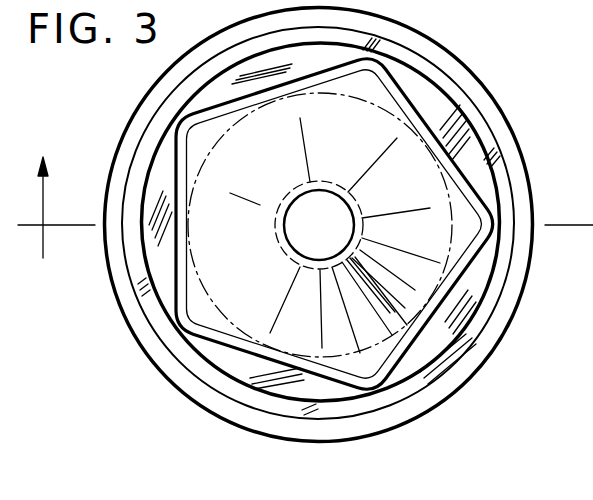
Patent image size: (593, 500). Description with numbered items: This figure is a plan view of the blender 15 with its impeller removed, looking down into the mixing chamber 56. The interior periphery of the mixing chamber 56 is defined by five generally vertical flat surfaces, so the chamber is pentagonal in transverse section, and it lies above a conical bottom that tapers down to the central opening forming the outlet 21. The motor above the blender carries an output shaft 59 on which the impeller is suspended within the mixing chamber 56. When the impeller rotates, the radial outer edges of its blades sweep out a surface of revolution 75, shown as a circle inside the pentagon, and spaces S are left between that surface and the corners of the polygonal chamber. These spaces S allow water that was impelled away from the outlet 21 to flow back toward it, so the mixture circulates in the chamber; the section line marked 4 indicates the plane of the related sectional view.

The blender 15 is at (458, 56).
The mixing chamber 56 is at (412, 162).
The spaces S is at (180, 103).
The outlet 21 is at (352, 212).
The output shaft 59 is at (260, 98).
The surface of revolution 75 is at (331, 358).
The section line 4- 4 is at (305, 211).